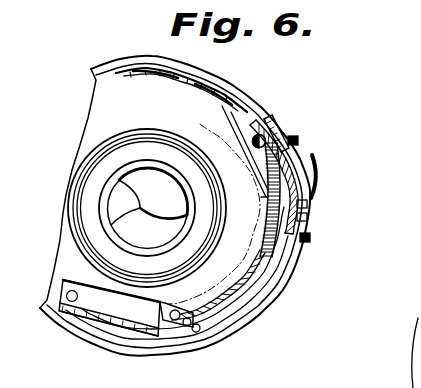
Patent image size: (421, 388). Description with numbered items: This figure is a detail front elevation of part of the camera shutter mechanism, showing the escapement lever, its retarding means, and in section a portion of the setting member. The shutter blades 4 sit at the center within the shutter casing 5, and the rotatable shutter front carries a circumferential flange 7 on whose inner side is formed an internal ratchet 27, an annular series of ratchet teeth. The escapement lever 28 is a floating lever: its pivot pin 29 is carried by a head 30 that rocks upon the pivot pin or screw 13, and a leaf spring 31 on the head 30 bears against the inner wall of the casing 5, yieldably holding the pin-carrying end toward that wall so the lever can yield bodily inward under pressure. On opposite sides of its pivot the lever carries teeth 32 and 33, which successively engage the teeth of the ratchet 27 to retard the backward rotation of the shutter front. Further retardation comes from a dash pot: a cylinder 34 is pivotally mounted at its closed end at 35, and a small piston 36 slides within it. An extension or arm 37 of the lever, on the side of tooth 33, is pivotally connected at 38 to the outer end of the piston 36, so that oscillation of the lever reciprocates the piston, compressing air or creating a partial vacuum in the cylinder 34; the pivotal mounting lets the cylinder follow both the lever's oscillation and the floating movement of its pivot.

The shutter blades 4 is at (157, 180).
The shutter casing 5 is at (218, 78).
The circumferential flange 7 is at (287, 132).
The pivot pin or screw 13 is at (268, 122).
The internal ratchet 27 is at (307, 217).
The escapement lever 28 is at (303, 163).
The pivot pin 29 is at (314, 187).
The head 30 is at (257, 157).
The leaf spring 31 is at (187, 80).
The tooth 32 is at (298, 140).
The tooth 33 is at (308, 238).
The cylinder 34 is at (127, 320).
The pivotal mounting 35 is at (60, 320).
The piston 36 is at (167, 330).
The extension or arm 37 is at (255, 282).
The pivotal connection 38 is at (200, 329).